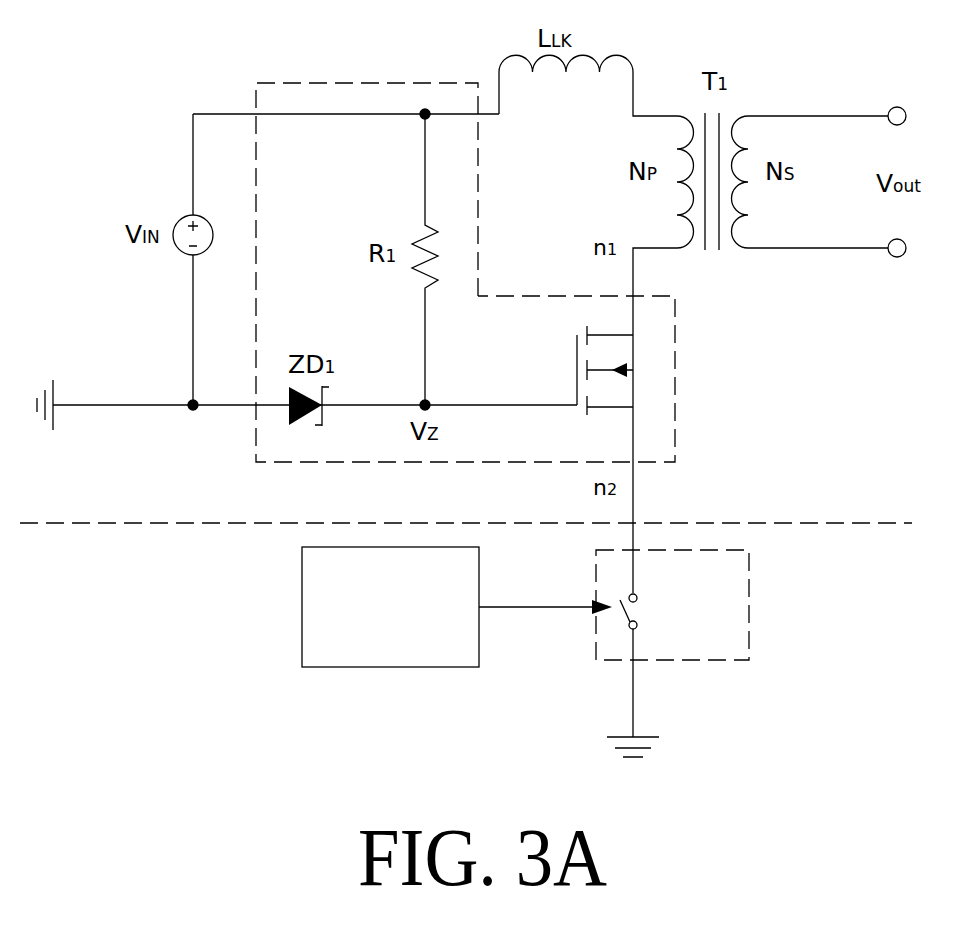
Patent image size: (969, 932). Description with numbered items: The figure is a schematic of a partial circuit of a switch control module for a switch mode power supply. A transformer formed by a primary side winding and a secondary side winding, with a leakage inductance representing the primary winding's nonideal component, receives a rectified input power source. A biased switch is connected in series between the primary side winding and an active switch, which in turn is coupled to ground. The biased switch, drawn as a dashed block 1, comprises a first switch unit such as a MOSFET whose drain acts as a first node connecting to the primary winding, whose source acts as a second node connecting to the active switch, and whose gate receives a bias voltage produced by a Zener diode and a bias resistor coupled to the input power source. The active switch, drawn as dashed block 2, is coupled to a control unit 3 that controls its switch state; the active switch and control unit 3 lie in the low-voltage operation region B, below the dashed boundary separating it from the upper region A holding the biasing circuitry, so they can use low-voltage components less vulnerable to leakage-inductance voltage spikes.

The first switch unit SWA (switch SW1) 1 is at (673, 332).
The second switch unit SWB 2 is at (749, 585).
The control unit 3 is at (320, 667).
The primary-side region A is at (104, 476).
The low-voltage operation region B is at (104, 580).